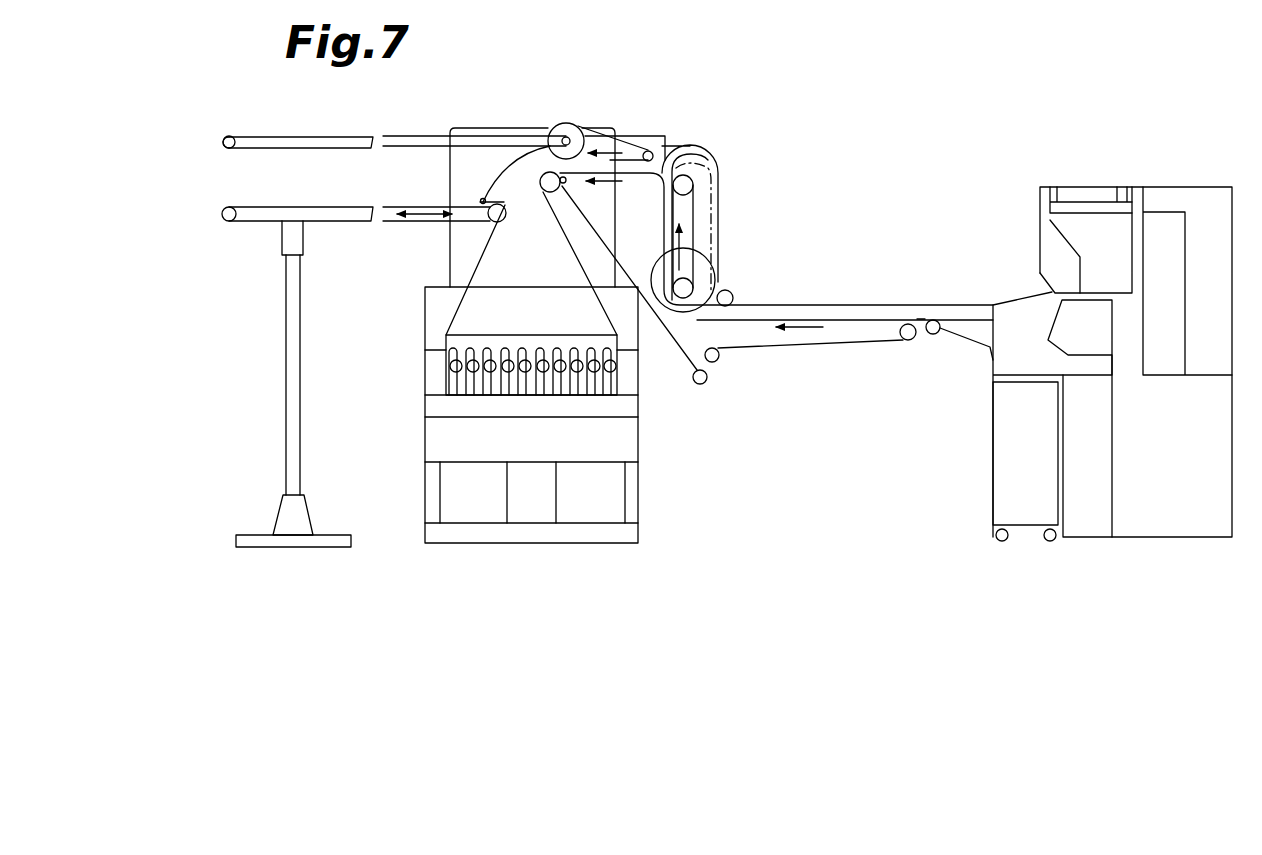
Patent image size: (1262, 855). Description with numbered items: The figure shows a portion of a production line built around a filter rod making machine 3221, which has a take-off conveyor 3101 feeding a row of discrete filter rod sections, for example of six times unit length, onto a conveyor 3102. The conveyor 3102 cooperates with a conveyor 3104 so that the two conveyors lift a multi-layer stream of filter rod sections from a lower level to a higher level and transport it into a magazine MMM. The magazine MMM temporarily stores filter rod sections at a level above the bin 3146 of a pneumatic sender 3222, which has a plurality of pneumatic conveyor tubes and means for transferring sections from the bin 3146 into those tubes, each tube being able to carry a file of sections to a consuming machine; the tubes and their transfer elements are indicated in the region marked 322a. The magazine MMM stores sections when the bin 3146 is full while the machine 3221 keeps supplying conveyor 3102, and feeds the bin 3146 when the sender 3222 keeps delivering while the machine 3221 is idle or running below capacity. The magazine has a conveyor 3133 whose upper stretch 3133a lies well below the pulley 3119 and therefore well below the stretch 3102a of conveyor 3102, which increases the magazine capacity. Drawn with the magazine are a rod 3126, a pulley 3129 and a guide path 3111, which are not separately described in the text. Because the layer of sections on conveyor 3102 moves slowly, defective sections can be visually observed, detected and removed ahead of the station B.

The magazine MMM is at (214, 190).
The upper stretch of conveyor 3133a is at (306, 189).
The conveyor 3133 is at (364, 222).
The upper guide rod 3126 is at (433, 98).
The pulley 3129 is at (517, 162).
The pulley 3119 is at (546, 192).
The stretch of conveyor 3102a is at (597, 176).
The guide path 3111 is at (707, 168).
The conveyor 3104 is at (676, 217).
The station B is at (672, 326).
The conveyor 3102 is at (772, 347).
The take-off conveyor 3101 is at (938, 338).
The bin 3146 is at (478, 260).
The pins 322a is at (490, 360).
The pneumatic sender 3222 is at (657, 446).
The filter rod making machine 3221 is at (972, 498).